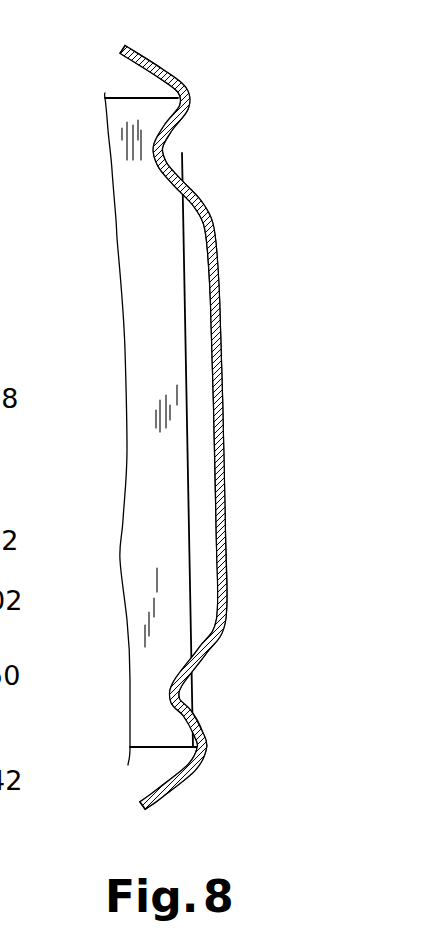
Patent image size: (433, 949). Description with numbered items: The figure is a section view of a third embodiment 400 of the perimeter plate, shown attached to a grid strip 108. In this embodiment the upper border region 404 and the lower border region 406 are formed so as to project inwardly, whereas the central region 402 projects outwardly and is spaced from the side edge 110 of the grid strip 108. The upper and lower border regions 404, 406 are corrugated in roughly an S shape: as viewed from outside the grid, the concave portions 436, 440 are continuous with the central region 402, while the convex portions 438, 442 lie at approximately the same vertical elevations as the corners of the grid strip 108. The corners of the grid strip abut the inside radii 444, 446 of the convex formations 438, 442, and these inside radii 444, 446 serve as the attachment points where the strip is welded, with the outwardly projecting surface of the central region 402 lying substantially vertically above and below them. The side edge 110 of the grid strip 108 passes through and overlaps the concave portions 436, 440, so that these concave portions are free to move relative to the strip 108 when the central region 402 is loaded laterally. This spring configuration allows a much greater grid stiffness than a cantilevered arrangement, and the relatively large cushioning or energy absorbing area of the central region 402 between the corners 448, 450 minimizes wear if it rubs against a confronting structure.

The third embodiment 400 is at (163, 52).
The central region 402 is at (222, 396).
The upper border region 404 is at (187, 96).
The lower border region 406 is at (210, 757).
The grid strip 108 is at (140, 485).
The side edge 110 is at (182, 160).
The concave portion 436 is at (153, 147).
The convex portion 438 is at (190, 104).
The concave portion 440 is at (173, 692).
The convex portion 442 is at (207, 748).
The inside radius 444 is at (177, 97).
The inside radius 446 is at (180, 198).
The corner 448 is at (212, 214).
The corner 450 is at (227, 623).